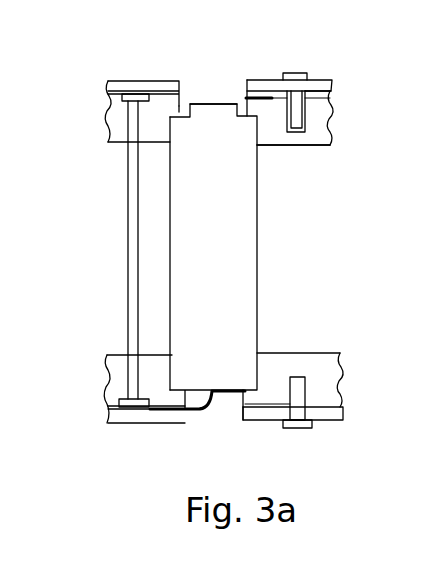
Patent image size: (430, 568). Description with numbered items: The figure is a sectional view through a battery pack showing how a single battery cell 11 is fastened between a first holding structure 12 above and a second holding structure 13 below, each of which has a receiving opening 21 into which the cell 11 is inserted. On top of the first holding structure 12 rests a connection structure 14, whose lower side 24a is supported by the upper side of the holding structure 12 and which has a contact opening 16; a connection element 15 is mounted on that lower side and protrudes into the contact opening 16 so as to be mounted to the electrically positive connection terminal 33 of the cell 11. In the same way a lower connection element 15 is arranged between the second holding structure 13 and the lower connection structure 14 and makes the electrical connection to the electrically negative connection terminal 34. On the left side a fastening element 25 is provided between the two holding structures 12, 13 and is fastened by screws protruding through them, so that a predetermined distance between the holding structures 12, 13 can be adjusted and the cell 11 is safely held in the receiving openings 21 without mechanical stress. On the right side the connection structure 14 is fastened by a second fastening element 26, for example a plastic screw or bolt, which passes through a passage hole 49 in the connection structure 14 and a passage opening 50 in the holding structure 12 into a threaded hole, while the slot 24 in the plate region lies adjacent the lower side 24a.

The battery cell 11 is at (258, 240).
The first holding structure 12 is at (328, 140).
The second holding structure 13 is at (340, 372).
The connection structure 14 is at (318, 80).
The connection element 15 is at (245, 98).
The contact opening 16 is at (180, 104).
The receiving opening 21 is at (183, 112).
The slot 24 is at (332, 98).
The lower side of the connection structure 24a is at (333, 89).
The fastening element 25 is at (128, 218).
The second fastening element 26 is at (295, 73).
The electrically positive connection terminal 33 is at (204, 106).
The electrically negative connection terminal 34 is at (211, 390).
The passage hole 49 is at (311, 79).
The passage opening 50 is at (306, 146).